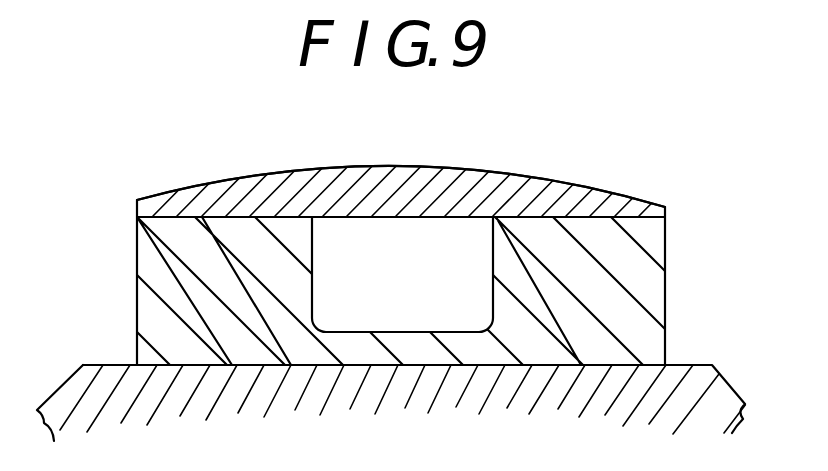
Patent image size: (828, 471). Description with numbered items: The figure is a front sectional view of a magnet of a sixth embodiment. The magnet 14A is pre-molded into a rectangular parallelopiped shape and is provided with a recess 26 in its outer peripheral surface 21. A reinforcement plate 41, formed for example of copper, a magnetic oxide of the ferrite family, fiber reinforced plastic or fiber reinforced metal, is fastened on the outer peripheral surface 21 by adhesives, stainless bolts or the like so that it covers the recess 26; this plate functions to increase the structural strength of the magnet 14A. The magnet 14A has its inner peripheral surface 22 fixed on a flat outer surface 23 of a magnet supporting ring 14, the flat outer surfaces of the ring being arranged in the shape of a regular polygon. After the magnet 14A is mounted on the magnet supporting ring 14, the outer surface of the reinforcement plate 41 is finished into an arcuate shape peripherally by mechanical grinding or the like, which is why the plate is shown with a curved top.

The magnet supporting ring 14 is at (687, 385).
The magnet 14A is at (181, 190).
The outer peripheral surface 21 is at (263, 216).
The inner peripheral surface 22 is at (293, 366).
The flat outer surface 23 is at (108, 364).
The recess 26 is at (357, 331).
The reinforcement plate 41 is at (358, 182).